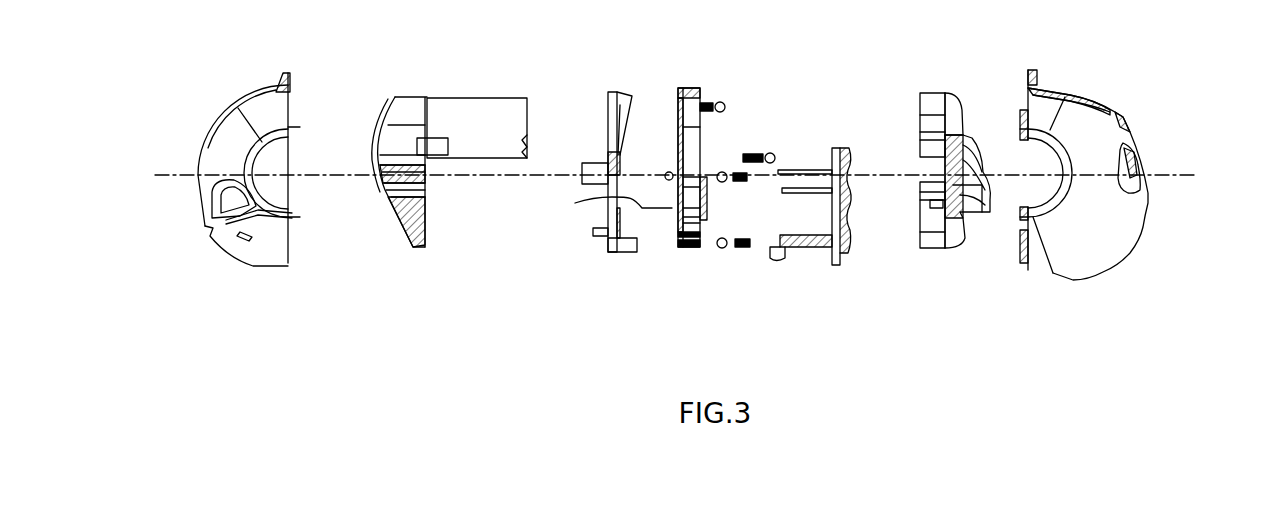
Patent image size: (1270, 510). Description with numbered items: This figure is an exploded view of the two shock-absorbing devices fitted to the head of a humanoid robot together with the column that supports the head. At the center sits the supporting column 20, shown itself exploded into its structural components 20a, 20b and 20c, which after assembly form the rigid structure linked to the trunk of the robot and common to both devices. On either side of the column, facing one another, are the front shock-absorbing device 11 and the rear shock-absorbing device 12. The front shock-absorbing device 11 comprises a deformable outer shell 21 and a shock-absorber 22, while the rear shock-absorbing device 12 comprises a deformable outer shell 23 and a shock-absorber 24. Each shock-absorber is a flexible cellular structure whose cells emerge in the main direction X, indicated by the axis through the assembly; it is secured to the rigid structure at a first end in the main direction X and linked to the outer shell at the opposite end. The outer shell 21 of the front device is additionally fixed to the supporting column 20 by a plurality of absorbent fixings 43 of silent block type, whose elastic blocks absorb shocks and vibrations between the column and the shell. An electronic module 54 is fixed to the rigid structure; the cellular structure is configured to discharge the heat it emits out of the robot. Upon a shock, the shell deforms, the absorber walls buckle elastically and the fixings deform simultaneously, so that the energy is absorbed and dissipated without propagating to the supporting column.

The rear shock-absorbing device 12 is at (318, 40).
The front shock-absorbing device 11 is at (971, 35).
The supporting column 20 is at (690, 44).
The structural component 20a is at (610, 253).
The structural component 20b is at (684, 253).
The structural component 20c is at (780, 268).
The outer shell 21 is at (1063, 283).
The shock-absorber 22 is at (940, 250).
The outer shell 23 is at (228, 268).
The shock-absorber 24 is at (410, 258).
The absorbent fixings 43 is at (730, 107).
The electronic module 54 is at (611, 207).
The main direction X is at (1162, 170).